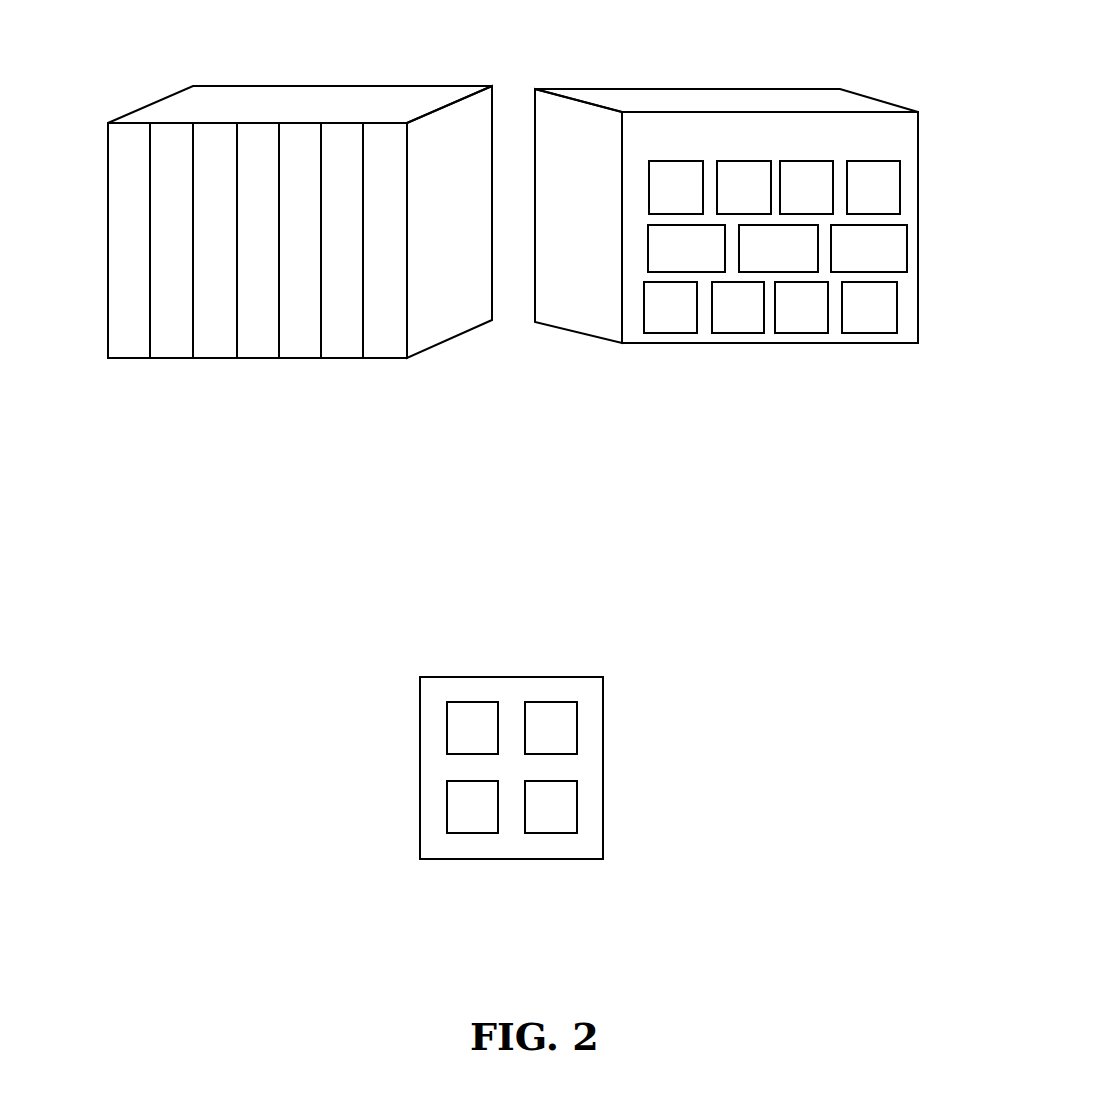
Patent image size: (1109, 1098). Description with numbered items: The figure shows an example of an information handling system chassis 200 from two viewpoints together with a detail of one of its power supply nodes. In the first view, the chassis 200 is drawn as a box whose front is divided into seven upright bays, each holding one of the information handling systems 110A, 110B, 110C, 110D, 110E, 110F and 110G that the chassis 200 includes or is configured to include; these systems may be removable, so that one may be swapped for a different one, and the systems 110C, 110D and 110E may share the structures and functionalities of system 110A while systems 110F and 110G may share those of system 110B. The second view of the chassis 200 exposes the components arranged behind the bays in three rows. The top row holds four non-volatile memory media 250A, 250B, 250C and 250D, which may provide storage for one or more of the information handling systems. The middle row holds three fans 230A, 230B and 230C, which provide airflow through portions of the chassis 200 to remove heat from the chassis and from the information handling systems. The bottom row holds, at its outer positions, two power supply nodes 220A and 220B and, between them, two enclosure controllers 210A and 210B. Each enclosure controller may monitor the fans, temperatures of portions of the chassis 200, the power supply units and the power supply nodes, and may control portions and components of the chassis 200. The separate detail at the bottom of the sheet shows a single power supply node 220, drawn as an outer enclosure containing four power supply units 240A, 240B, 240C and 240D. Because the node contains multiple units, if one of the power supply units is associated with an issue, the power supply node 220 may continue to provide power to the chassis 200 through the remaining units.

The information handling system chassis 200 is at (300, 86).
The information handling system 110A is at (128, 358).
The information handling system 110B is at (173, 358).
The information handling system 110C is at (218, 358).
The information handling system 110D is at (259, 358).
The information handling system 110E is at (302, 358).
The information handling system 110F is at (345, 358).
The information handling system 110G is at (390, 358).
The non-volatile memory medium 250A is at (677, 161).
The non-volatile memory medium 250B is at (730, 161).
The non-volatile memory medium 250C is at (806, 161).
The non-volatile memory medium 250D is at (873, 161).
The fan 230A is at (665, 257).
The fan 230B is at (757, 257).
The fan 230C is at (848, 257).
The power supply node 220A is at (673, 333).
The power supply node 220B is at (868, 333).
The enclosure controller 210A is at (740, 333).
The enclosure controller 210B is at (800, 333).
The power supply node 220 is at (510, 859).
The power supply unit 240A is at (447, 728).
The power supply unit 240B is at (577, 725).
The power supply unit 240C is at (577, 803).
The power supply unit 240D is at (447, 803).